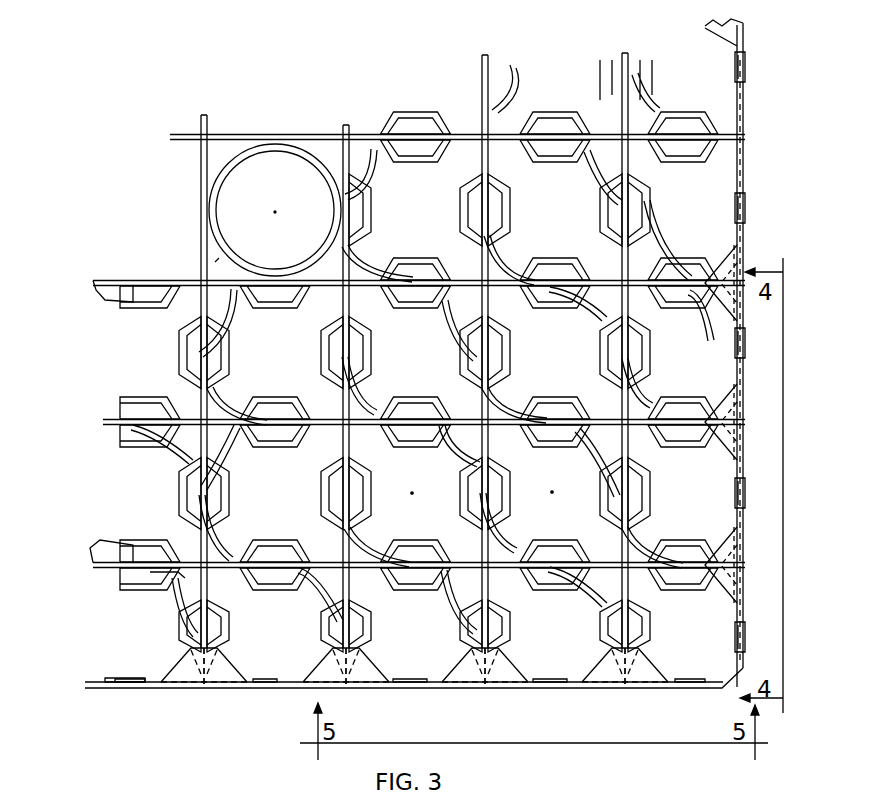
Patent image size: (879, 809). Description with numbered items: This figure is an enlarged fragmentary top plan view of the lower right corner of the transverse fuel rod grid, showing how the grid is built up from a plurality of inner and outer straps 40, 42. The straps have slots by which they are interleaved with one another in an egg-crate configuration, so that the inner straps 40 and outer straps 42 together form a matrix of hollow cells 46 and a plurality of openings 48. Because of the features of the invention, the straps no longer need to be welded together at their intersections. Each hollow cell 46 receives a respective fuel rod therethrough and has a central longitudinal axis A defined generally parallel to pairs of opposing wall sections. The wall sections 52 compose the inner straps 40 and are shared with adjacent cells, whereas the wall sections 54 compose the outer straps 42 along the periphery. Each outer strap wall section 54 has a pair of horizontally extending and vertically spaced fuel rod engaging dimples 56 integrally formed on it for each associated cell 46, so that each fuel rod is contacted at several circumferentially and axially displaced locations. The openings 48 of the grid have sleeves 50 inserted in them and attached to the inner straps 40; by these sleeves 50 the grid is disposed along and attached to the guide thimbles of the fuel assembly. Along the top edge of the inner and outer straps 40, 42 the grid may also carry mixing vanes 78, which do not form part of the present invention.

The inner straps 40 is at (222, 487).
The outer straps 42 is at (300, 688).
The hollow cells 46 is at (690, 347).
The openings 48 is at (218, 262).
The sleeves 50 is at (223, 170).
The wall sections 52 is at (560, 420).
The wall sections 54 is at (142, 688).
The fuel rod engaging dimples 56 is at (140, 681).
The mixing vanes 78 is at (178, 578).
The central longitudinal axis A is at (552, 492).